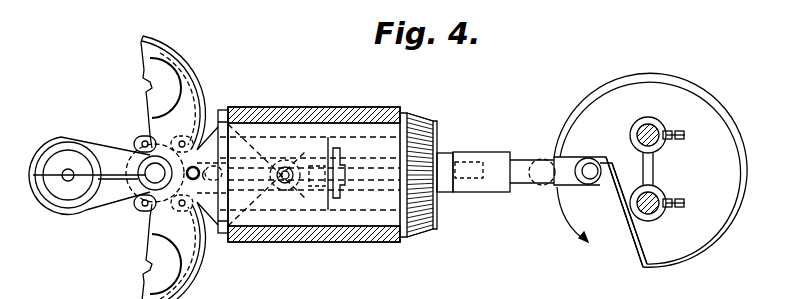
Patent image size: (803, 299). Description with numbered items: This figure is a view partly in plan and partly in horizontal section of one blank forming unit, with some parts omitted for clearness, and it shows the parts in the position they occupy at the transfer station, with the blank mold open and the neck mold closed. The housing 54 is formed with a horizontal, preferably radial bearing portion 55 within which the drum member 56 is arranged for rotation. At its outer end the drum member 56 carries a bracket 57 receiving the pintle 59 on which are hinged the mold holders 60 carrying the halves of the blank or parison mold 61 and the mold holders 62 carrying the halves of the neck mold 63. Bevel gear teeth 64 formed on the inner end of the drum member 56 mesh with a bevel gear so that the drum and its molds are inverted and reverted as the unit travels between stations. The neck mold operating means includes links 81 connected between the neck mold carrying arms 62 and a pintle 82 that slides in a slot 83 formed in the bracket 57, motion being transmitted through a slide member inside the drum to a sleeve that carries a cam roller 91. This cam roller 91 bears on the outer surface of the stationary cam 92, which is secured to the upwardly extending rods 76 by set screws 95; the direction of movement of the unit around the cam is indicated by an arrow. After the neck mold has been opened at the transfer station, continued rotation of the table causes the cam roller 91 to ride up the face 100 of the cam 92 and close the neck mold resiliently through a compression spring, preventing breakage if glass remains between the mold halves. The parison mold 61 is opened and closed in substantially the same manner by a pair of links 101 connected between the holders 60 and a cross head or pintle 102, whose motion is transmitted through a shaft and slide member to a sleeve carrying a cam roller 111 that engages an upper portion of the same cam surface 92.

The housing 54 is at (262, 240).
The bearing portion 55 is at (333, 106).
The drum member 56 is at (366, 130).
The bracket 57 is at (233, 108).
The pintle 59 is at (143, 178).
The mold holders 60 is at (186, 49).
The blank or parison mold 61 is at (150, 62).
The mold holders 62 is at (112, 188).
The neck mold 63 is at (53, 188).
The bevel gear teeth 64 is at (430, 124).
The rods 76 is at (657, 188).
The links 81 is at (152, 114).
The pintle 82 is at (194, 181).
The slot 83 is at (222, 175).
The cam roller 91 is at (539, 159).
The cam 92 is at (724, 228).
The set screws 95 is at (678, 134).
The face 100 is at (628, 233).
The links 101 is at (211, 127).
The cross head or pintle 102 is at (274, 163).
The cam roller 111 is at (583, 186).